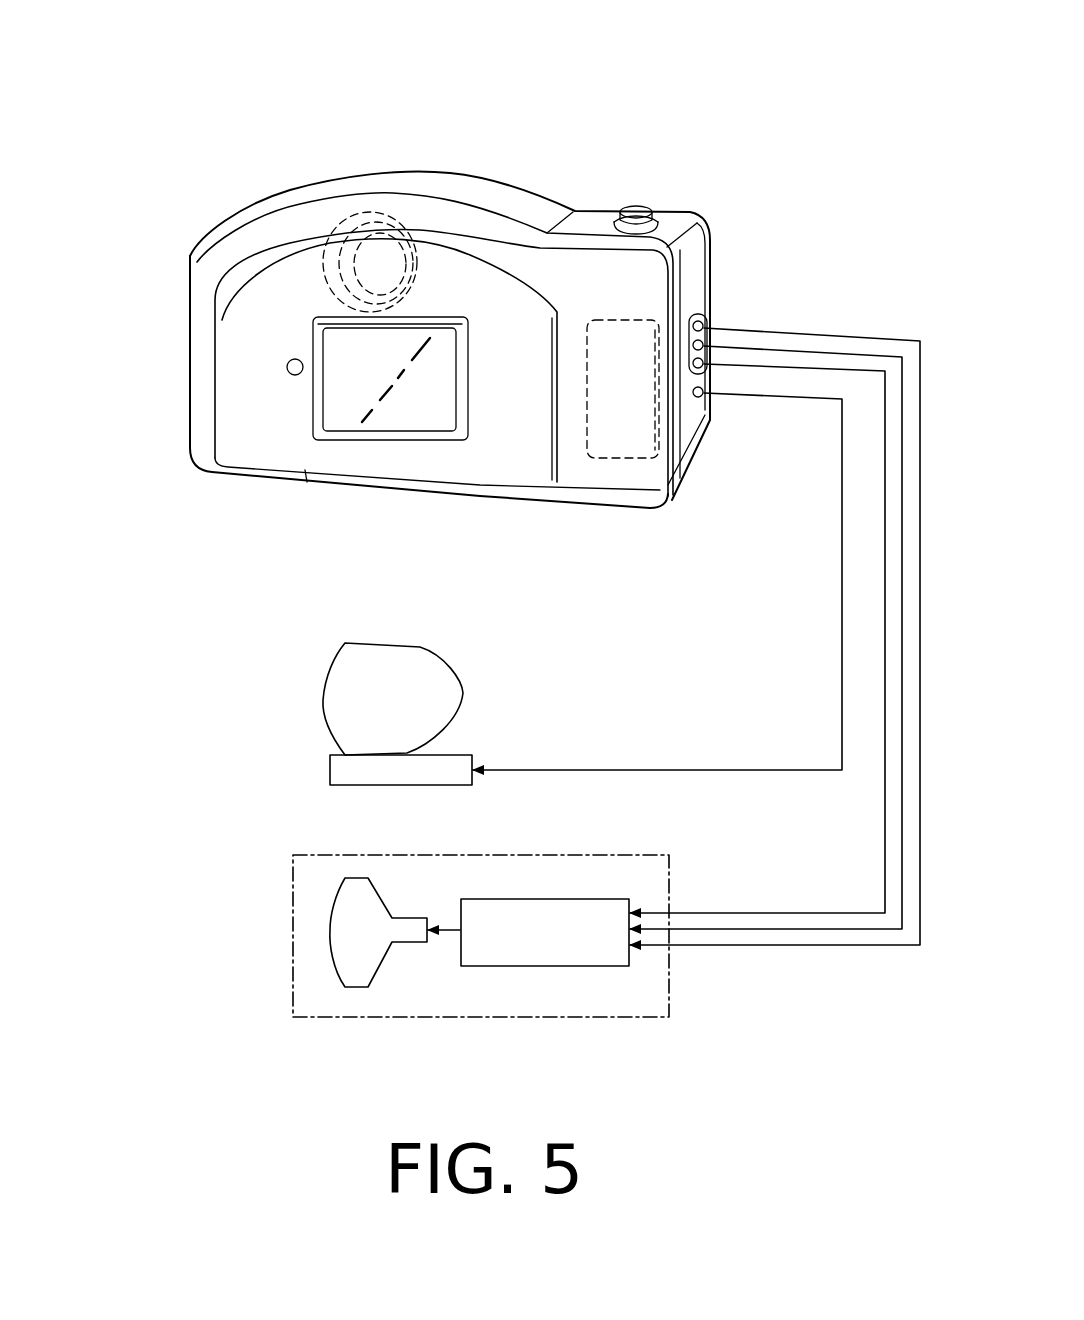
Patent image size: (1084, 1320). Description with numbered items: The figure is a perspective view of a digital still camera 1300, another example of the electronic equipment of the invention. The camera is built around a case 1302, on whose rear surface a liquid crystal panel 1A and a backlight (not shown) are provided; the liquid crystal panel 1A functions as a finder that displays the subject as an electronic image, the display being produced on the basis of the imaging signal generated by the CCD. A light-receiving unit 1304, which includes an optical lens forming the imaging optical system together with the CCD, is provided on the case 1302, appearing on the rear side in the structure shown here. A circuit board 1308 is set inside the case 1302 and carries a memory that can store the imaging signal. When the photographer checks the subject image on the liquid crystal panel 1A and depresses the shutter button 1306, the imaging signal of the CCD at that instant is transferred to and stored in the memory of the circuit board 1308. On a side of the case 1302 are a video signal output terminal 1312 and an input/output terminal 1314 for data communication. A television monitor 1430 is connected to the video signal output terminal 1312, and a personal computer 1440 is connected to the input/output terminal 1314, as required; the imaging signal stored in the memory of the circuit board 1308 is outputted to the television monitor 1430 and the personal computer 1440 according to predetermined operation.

The digital still camera 1300 is at (538, 118).
The case 1302 is at (208, 285).
The light-receiving unit 1304 is at (408, 228).
The shutter button 1306 is at (635, 207).
The circuit board 1308 is at (620, 438).
The video signal output terminal 1312 is at (700, 318).
The input/output terminal for data communication 1314 is at (703, 397).
The liquid crystal panel 1A is at (422, 397).
The personal computer 1440 is at (337, 657).
The television monitor 1430 is at (293, 917).